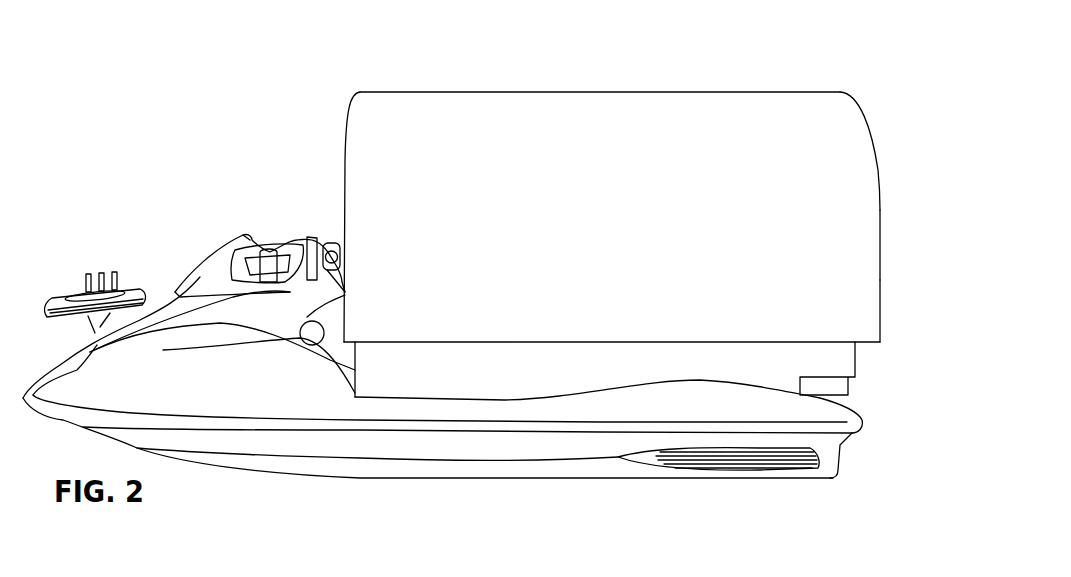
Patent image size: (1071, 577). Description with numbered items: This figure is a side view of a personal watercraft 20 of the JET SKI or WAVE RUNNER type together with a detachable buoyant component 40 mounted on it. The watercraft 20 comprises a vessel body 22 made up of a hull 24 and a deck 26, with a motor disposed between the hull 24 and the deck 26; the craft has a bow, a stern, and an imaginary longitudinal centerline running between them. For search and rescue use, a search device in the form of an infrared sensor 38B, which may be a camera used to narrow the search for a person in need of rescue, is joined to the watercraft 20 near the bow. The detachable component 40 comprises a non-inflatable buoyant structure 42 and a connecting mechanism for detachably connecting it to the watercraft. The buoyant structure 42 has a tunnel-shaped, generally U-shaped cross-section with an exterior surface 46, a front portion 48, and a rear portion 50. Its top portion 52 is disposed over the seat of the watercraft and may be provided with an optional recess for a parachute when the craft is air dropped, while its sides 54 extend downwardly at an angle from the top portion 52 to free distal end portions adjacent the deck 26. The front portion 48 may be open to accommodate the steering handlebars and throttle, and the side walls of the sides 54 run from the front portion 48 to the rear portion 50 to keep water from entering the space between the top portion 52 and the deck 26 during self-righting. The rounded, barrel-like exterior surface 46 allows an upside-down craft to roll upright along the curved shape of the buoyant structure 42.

The watercraft 20 is at (140, 189).
The vessel body 22 is at (285, 459).
The hull 24 is at (413, 443).
The deck 26 is at (865, 417).
The infrared sensor 38B is at (90, 277).
The detachable component 40 is at (748, 132).
The buoyant structure 42 is at (608, 263).
The exterior surface 46 is at (820, 172).
The front portion 48 is at (347, 160).
The rear portion 50 is at (880, 215).
The top portion 52 is at (575, 92).
The sides 54 is at (828, 278).